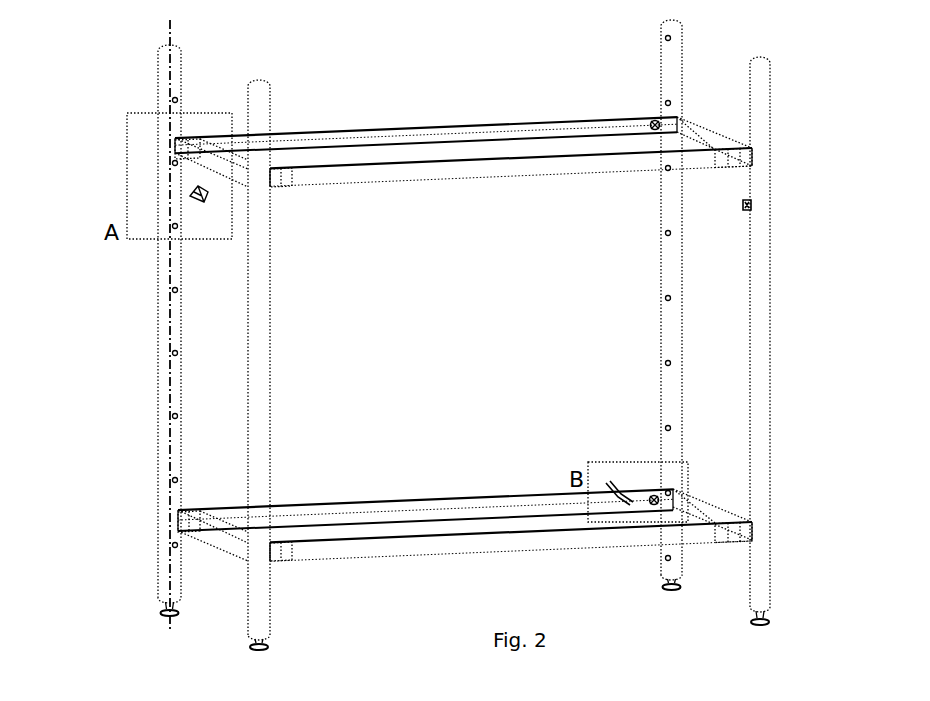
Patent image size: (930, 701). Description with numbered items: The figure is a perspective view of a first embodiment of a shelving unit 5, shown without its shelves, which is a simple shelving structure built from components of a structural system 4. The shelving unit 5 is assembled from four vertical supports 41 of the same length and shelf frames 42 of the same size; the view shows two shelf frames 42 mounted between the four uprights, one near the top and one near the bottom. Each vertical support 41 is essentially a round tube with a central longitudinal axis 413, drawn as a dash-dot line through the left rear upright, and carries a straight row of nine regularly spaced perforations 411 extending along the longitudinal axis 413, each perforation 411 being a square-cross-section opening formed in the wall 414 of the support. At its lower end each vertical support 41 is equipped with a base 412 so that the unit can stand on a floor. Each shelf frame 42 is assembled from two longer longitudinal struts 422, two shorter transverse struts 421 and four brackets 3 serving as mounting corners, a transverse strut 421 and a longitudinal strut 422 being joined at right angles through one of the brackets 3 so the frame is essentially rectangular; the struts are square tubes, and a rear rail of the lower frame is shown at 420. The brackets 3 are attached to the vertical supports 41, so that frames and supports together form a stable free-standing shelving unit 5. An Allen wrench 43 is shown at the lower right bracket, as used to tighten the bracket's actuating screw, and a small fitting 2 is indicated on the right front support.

The bracket 2 is at (752, 204).
The bracket 3 is at (652, 119).
The structural system 4 is at (100, 125).
The shelving unit 5 is at (118, 401).
The vertical support 41 is at (795, 404).
The shelf frame 42 is at (463, 109).
The Allen wrench 43 is at (630, 495).
The perforation 411 is at (670, 103).
The base 412 is at (762, 614).
The longitudinal axis 413 is at (158, 333).
The wall 414 is at (259, 365).
The lower rear rail 420 is at (465, 525).
The transverse strut 421 is at (216, 536).
The longitudinal strut 422 is at (455, 130).